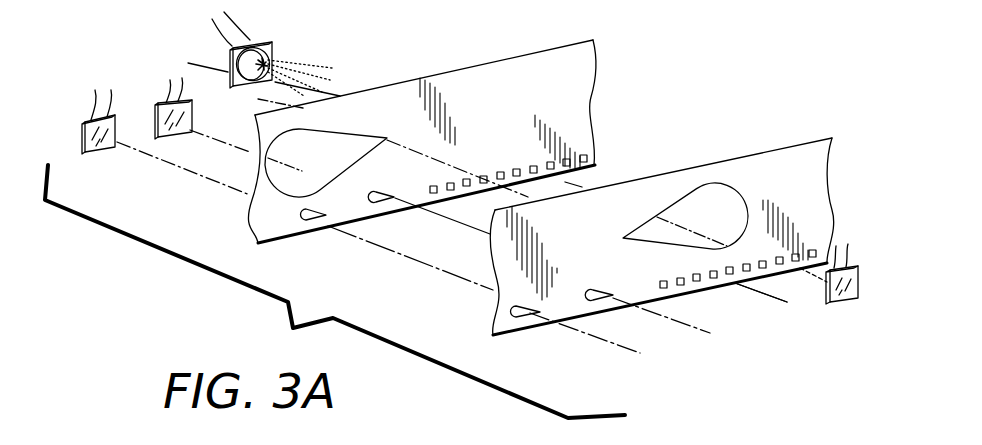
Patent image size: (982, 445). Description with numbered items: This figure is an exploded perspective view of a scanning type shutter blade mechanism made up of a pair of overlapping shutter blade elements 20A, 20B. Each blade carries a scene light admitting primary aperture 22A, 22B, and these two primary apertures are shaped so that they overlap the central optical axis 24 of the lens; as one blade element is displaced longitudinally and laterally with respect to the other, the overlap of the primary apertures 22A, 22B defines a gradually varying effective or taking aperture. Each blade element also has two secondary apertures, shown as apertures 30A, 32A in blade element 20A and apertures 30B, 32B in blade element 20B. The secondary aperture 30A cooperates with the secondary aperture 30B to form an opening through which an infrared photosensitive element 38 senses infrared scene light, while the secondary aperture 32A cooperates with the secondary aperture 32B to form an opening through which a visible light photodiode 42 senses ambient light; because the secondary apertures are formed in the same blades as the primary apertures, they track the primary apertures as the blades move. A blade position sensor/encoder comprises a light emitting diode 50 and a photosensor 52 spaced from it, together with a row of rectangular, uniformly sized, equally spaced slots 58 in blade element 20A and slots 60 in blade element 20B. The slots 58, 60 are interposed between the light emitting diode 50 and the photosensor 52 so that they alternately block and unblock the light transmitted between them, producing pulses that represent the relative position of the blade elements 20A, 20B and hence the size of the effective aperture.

The shutter blade element 20A is at (762, 148).
The shutter blade element 20B is at (481, 63).
The primary aperture 22A is at (710, 202).
The primary aperture 22B is at (294, 182).
The central optical axis 24 is at (748, 287).
The secondary aperture 30A is at (522, 316).
The secondary aperture 30B is at (313, 218).
The secondary aperture 32A is at (603, 300).
The secondary aperture 32B is at (387, 202).
The infrared photosensitive element 38 is at (82, 131).
The visible light photodiode 42 is at (157, 117).
The light emitting diode 50 is at (277, 42).
The photosensor 52 is at (838, 305).
The slots 58 is at (685, 283).
The slots 60 is at (597, 163).